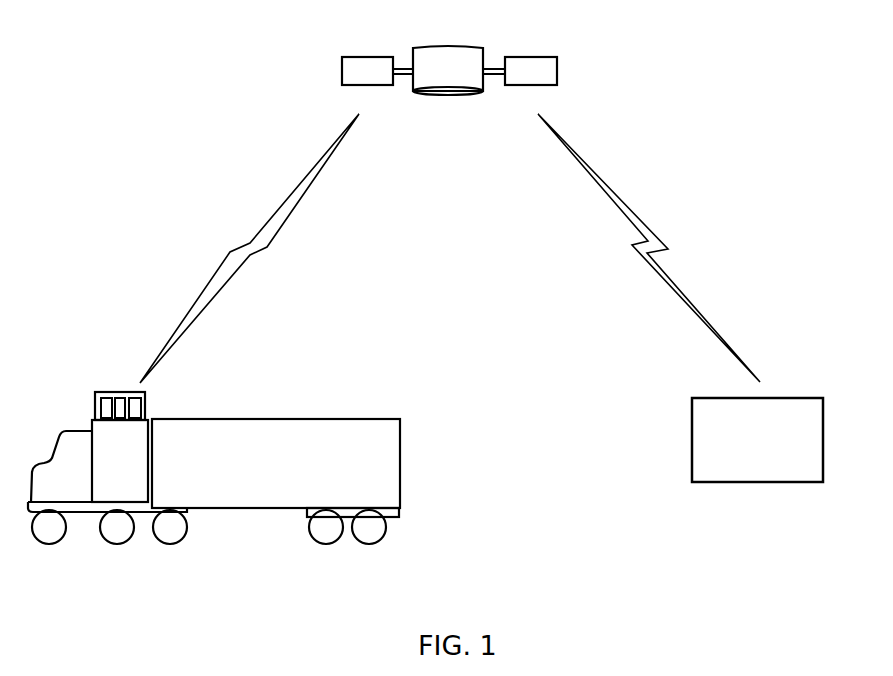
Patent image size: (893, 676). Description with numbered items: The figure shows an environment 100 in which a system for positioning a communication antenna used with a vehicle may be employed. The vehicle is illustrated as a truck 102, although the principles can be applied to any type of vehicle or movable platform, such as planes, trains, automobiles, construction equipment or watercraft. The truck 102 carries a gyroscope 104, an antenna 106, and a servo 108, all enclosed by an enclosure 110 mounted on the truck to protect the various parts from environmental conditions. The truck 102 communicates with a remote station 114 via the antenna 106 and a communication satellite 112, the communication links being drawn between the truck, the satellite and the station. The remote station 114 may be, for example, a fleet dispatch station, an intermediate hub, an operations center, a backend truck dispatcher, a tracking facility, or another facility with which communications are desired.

The environment 100 is at (425, 280).
The truck 102 is at (214, 449).
The gyroscope 104 is at (102, 395).
The antenna 106 is at (120, 397).
The servo 108 is at (135, 395).
The enclosure 110 is at (92, 412).
The communication satellite 112 is at (448, 46).
The remote station 114 is at (748, 482).